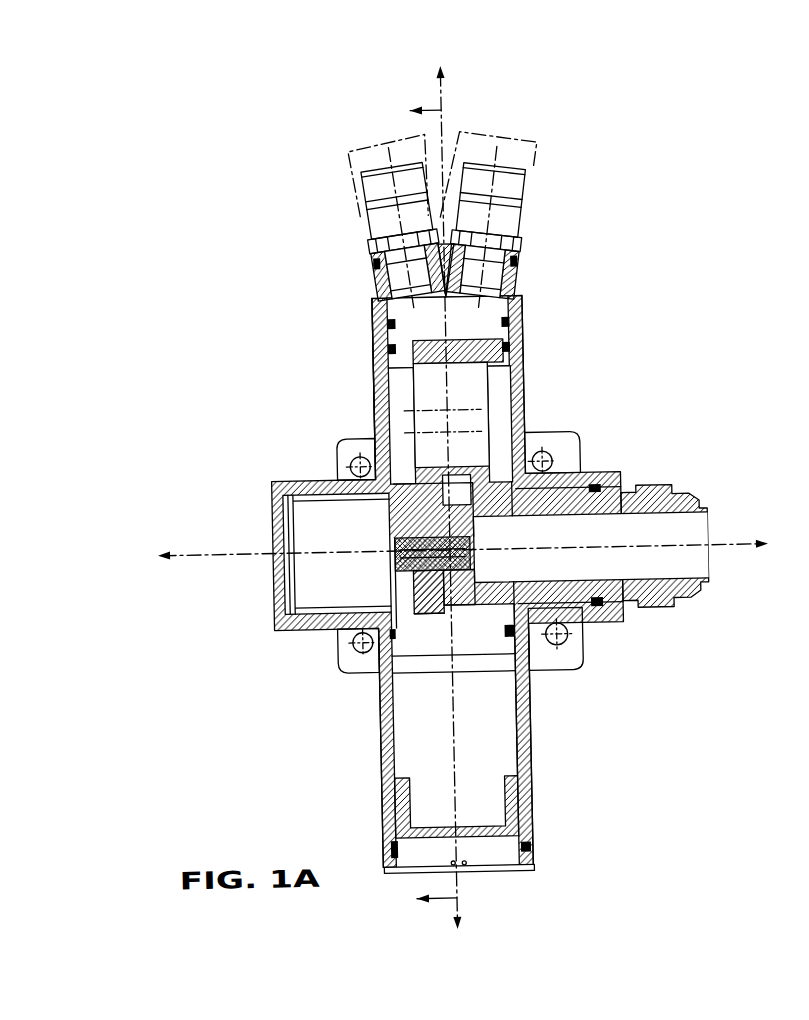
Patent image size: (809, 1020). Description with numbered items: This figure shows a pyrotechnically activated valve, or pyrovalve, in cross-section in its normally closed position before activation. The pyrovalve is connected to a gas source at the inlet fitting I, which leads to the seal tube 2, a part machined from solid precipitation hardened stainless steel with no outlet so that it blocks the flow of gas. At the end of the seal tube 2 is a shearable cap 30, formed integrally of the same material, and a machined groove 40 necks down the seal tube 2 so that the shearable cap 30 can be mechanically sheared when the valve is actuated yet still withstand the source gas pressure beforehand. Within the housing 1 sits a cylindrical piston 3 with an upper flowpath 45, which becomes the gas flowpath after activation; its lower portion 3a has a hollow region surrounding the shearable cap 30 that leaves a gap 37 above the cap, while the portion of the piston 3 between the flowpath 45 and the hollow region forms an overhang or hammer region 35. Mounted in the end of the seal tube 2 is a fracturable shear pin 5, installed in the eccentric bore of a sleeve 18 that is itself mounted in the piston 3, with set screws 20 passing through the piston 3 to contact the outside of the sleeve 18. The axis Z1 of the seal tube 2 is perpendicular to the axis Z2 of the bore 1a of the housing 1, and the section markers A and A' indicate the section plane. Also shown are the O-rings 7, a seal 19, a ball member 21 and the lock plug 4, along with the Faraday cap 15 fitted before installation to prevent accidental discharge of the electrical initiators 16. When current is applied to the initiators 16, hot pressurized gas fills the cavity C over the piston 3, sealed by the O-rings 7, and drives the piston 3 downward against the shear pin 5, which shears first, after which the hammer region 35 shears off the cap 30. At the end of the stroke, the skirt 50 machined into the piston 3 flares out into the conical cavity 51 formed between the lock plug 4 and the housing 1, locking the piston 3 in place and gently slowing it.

The housing 1 is at (373, 413).
The bore of the housing 1a is at (373, 393).
The seal tube 2 is at (591, 493).
The piston 3 is at (380, 366).
The lower portion of the piston 3a is at (421, 491).
The lock plug 4 is at (541, 872).
The shear pin 5 is at (405, 531).
The O-rings 7 is at (390, 345).
The Faraday cap 15 is at (360, 141).
The electrical initiators 16 is at (376, 230).
The sleeve 18 is at (431, 603).
The seal 19 is at (517, 656).
The set screws 20 is at (401, 576).
The ball bearing or ball member 21 is at (584, 625).
The shearable cap 30 is at (463, 496).
The overhang or hammer region 35 is at (444, 468).
The gap 37 is at (459, 478).
The groove 40 is at (537, 452).
The upper flowpath 45 is at (508, 301).
The skirt 50 is at (378, 672).
The conical cavity 51 is at (390, 781).
The cavity C is at (390, 297).
The inlet fitting I is at (268, 553).
The axis of the seal tube Z1 is at (717, 545).
The axis of the bore of the housing Z2 is at (443, 908).
The section line A is at (426, 894).
The section line A' is at (410, 101).